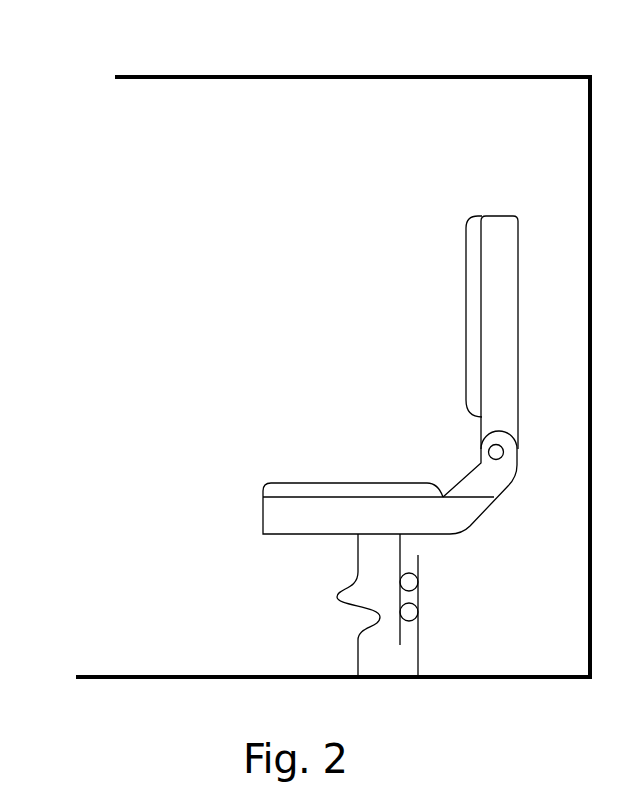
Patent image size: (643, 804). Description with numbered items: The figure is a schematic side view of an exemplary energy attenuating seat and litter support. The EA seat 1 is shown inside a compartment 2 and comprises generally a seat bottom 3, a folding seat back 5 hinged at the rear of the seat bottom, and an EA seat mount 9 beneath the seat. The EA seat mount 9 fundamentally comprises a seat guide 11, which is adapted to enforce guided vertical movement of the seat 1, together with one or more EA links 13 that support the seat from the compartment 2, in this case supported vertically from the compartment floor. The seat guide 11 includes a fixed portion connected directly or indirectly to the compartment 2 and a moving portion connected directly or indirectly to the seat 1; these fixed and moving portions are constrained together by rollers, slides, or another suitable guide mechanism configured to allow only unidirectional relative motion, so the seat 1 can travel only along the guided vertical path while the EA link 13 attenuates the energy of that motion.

The EA seat 1 is at (300, 253).
The compartment 2 is at (388, 74).
The seat bottom 3 is at (310, 456).
The folding seat back 5 is at (435, 322).
The EA seat mount 9 is at (351, 605).
The seat guide 11 is at (420, 613).
The EA link 13 is at (357, 640).